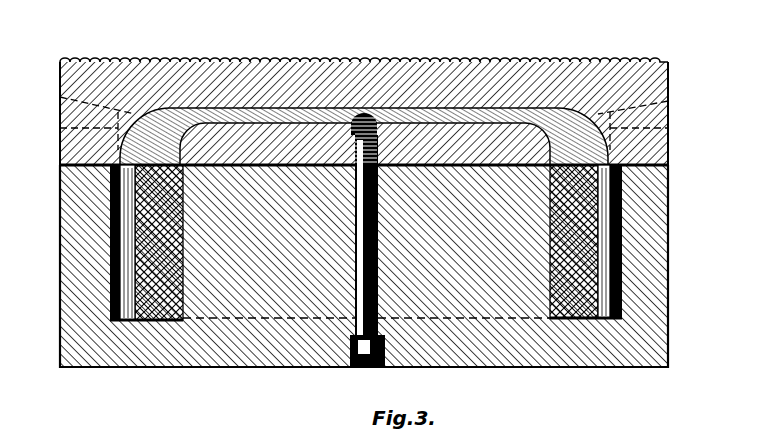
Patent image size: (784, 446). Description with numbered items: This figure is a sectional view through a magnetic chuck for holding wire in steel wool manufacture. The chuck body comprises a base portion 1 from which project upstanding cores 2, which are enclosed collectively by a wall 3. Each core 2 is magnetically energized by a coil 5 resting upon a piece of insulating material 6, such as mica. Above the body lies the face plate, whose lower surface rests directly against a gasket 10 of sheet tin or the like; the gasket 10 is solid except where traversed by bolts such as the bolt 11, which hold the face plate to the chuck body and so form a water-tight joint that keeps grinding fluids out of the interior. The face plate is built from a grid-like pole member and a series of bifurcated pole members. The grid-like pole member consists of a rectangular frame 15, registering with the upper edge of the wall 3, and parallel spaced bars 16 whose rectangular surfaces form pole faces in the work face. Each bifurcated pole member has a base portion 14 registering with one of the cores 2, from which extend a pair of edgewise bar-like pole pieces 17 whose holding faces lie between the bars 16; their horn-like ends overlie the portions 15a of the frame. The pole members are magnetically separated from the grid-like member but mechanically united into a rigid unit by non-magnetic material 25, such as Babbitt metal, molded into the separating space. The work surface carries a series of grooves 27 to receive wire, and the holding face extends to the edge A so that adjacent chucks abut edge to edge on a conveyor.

The base portion 1 is at (246, 365).
The upstanding core 2 is at (535, 250).
The wall 3 is at (68, 270).
The coil 5 is at (68, 300).
The insulating material 6 is at (160, 324).
The gasket 10 is at (60, 166).
The bolt 11 is at (338, 368).
The base portion 14 is at (251, 162).
The rectangular frame 15 is at (60, 139).
The frame portion 15a is at (60, 115).
The bar 16 is at (340, 80).
The pole piece 17 is at (670, 62).
The non-magnetic material 25 is at (118, 172).
The groove 27 is at (158, 60).
The edge A is at (693, 83).